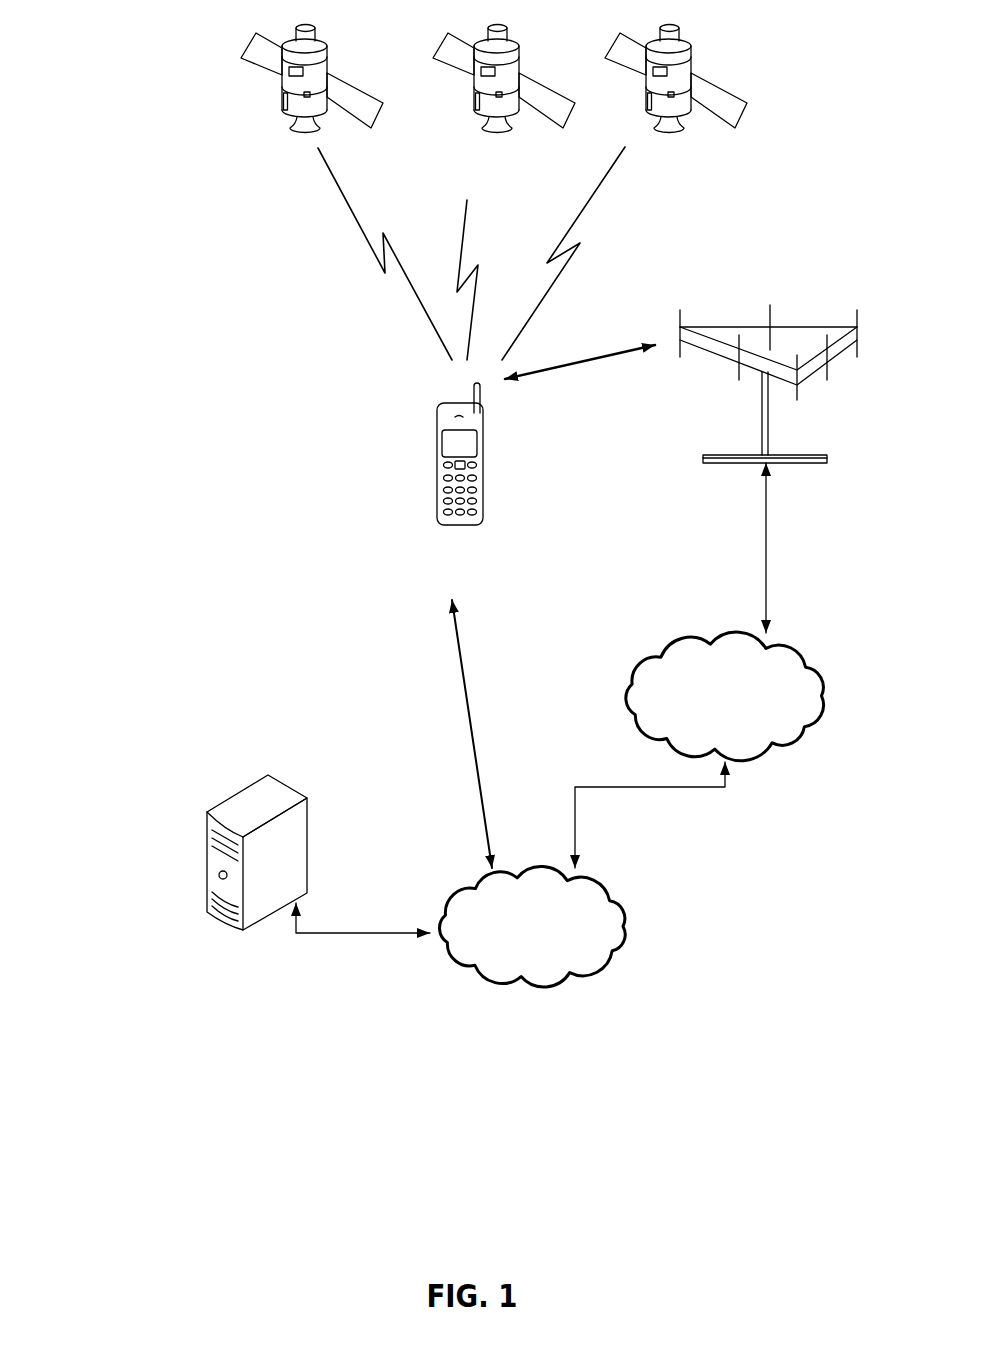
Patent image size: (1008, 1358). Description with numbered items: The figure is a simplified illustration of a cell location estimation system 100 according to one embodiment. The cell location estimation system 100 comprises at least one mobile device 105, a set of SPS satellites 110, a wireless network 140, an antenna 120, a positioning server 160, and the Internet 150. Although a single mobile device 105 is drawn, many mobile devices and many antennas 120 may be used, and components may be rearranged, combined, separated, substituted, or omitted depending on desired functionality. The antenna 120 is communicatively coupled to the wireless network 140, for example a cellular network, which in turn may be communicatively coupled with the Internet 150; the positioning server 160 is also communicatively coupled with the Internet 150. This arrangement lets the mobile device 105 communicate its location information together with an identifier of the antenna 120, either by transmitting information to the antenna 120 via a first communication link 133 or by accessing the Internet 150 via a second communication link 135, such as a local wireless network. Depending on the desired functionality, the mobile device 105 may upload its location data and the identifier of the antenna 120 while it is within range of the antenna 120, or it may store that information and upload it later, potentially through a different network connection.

The cell location estimation system 100 is at (151, 1128).
The mobile device 105 is at (437, 455).
The SPS satellites 110 is at (226, 88).
The antenna 120 is at (797, 467).
The first communication link 133 is at (567, 356).
The second communication link 135 is at (473, 713).
The wireless network 140 is at (817, 658).
The Internet 150 is at (633, 938).
The positioning server 160 is at (283, 790).